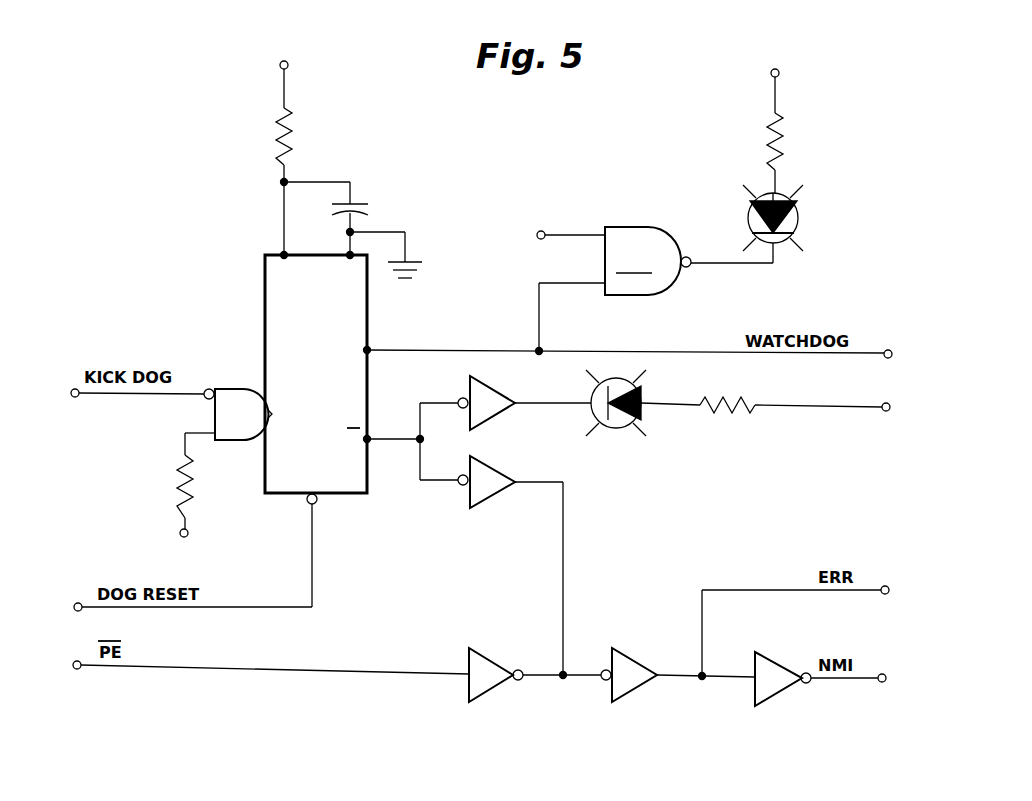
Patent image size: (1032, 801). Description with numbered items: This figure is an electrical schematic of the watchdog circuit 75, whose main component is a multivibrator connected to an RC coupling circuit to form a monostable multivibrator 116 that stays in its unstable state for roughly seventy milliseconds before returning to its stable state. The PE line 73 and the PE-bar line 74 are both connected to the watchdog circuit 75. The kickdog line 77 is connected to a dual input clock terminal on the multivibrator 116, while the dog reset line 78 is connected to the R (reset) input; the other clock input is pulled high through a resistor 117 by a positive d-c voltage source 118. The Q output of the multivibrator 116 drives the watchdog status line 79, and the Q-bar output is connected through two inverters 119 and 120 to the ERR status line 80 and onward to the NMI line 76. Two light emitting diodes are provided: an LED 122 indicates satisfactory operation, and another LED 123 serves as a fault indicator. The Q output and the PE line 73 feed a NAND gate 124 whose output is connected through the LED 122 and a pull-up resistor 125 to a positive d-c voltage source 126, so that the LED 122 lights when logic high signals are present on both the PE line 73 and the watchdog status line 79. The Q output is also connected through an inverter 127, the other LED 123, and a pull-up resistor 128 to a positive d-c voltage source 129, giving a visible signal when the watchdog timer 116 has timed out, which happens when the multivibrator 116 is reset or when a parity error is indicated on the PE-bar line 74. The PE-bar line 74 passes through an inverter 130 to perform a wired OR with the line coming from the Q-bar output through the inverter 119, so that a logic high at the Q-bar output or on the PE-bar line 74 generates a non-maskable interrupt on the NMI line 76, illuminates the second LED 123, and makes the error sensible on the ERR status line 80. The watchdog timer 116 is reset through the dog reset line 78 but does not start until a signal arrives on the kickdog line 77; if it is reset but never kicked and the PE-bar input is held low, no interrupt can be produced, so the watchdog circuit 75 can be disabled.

The PE line 73 is at (537, 231).
The PE-bar line 74 is at (79, 669).
The watchdog circuit 75 is at (508, 160).
The NMI line 76 is at (882, 674).
The kickdog line 77 is at (78, 397).
The dog reset line 78 is at (78, 603).
The watchdog status line 79 is at (888, 350).
The ERR status line 80 is at (885, 586).
The monostable multivibrator 116 is at (258, 308).
The resistor 117 is at (180, 500).
The positive d-c voltage source 118 is at (180, 535).
The inverter 119 is at (487, 500).
The inverter 120 is at (640, 690).
The LED 122 is at (798, 222).
The LED 123 is at (627, 428).
The NAND gate 124 is at (648, 261).
The pull-up resistor 125 is at (790, 128).
The positive d-c voltage source 126 is at (288, 68).
The inverter 127 is at (497, 415).
The pull-up resistor 128 is at (735, 409).
The positive d-c voltage source 129 is at (885, 412).
The inverter 130 is at (497, 690).